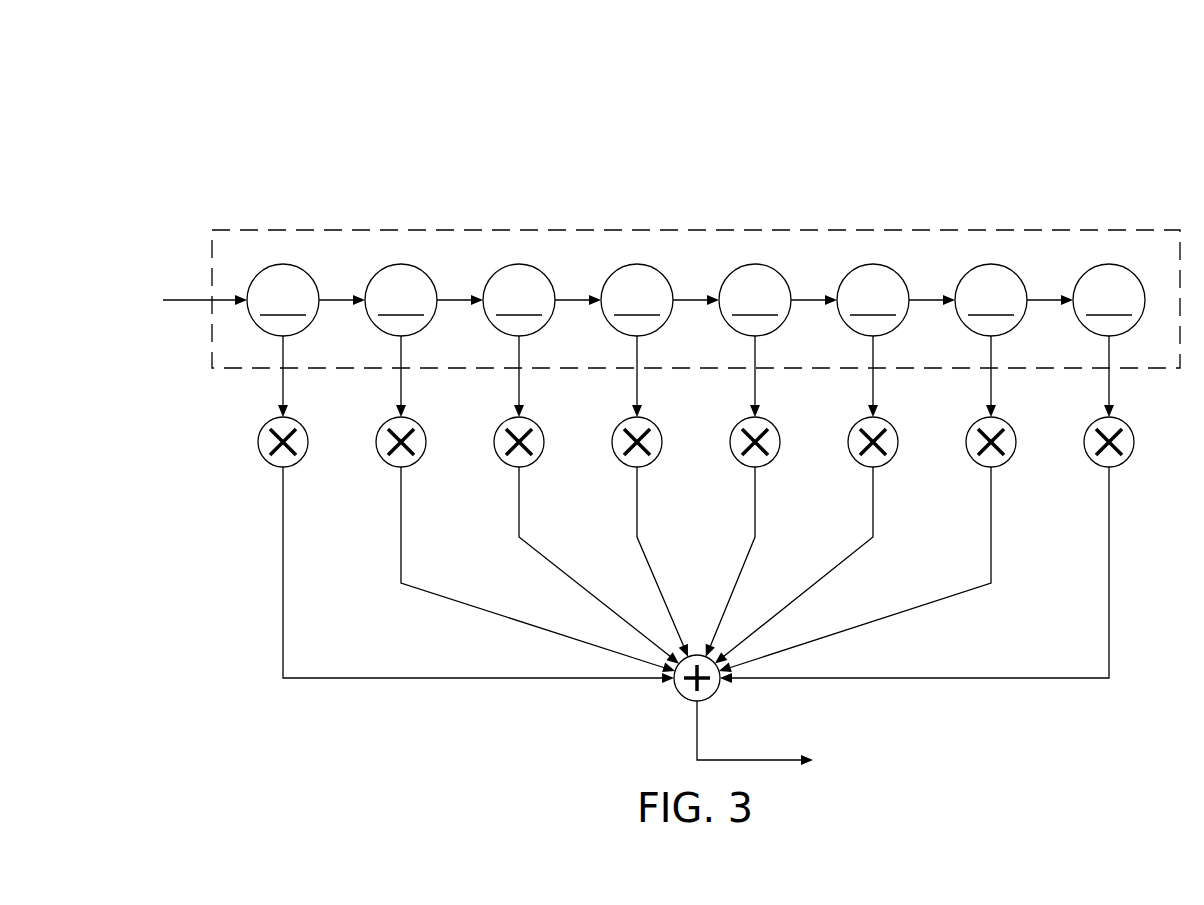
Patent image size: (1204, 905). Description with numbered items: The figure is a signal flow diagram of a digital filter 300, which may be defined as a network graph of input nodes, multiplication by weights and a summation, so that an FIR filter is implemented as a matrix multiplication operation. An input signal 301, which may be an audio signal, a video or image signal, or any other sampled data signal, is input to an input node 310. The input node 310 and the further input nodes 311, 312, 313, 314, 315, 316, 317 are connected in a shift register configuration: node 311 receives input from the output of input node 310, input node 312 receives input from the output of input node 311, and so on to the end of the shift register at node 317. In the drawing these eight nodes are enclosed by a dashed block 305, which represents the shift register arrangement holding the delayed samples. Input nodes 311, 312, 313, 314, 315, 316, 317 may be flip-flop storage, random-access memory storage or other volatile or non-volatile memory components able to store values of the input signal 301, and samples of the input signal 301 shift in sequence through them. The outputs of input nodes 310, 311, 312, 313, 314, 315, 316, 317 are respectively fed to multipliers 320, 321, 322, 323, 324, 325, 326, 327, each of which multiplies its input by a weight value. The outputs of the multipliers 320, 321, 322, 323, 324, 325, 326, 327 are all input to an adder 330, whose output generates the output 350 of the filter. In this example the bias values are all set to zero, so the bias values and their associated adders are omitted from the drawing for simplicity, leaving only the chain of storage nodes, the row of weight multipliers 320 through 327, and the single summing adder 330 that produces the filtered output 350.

The digital filter 300 is at (418, 108).
The input signal 301 is at (190, 298).
The delay line / shift register 305 is at (553, 222).
The input node 310 is at (306, 300).
The input node 311 is at (424, 300).
The input node 312 is at (542, 300).
The input node 313 is at (660, 300).
The input node 314 is at (778, 300).
The input node 315 is at (896, 300).
The input node 316 is at (1014, 300).
The input node 317 is at (1109, 300).
The multiplier 320 is at (273, 465).
The multiplier 321 is at (391, 465).
The multiplier 322 is at (509, 465).
The multiplier 323 is at (627, 465).
The multiplier 324 is at (765, 465).
The multiplier 325 is at (883, 465).
The multiplier 326 is at (1001, 465).
The multiplier 327 is at (1119, 465).
The adder 330 is at (692, 702).
The output 350 is at (755, 757).